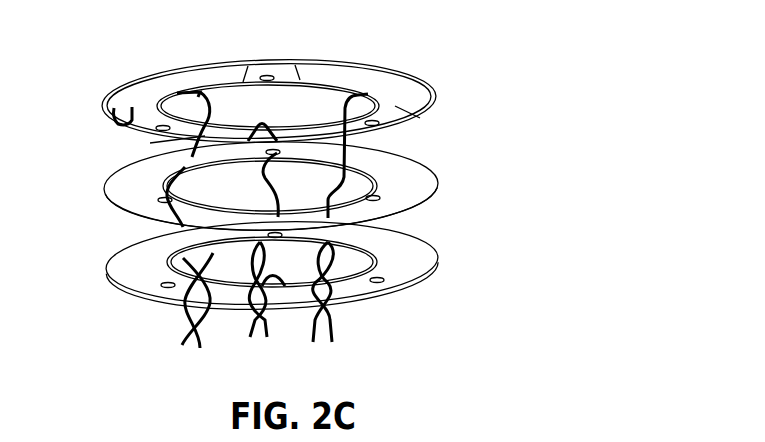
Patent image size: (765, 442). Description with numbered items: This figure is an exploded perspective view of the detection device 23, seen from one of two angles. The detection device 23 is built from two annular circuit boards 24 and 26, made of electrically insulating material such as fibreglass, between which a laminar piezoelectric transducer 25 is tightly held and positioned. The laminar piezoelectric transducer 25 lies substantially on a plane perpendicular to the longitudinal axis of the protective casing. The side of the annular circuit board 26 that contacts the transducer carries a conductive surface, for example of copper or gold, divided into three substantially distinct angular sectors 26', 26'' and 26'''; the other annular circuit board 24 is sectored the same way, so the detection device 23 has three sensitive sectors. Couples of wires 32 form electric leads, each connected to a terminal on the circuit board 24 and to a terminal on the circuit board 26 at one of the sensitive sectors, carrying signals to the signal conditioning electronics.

The detection device 23 is at (480, 88).
The annular circuit board 24 is at (132, 275).
The laminar piezoelectric transducer 25 is at (132, 188).
The annular circuit board 26 is at (269, 109).
The angular sector 26' is at (92, 122).
The angular sector 26'' is at (121, 161).
The angular sector 26''' is at (454, 139).
The couples of wires 32 is at (314, 328).